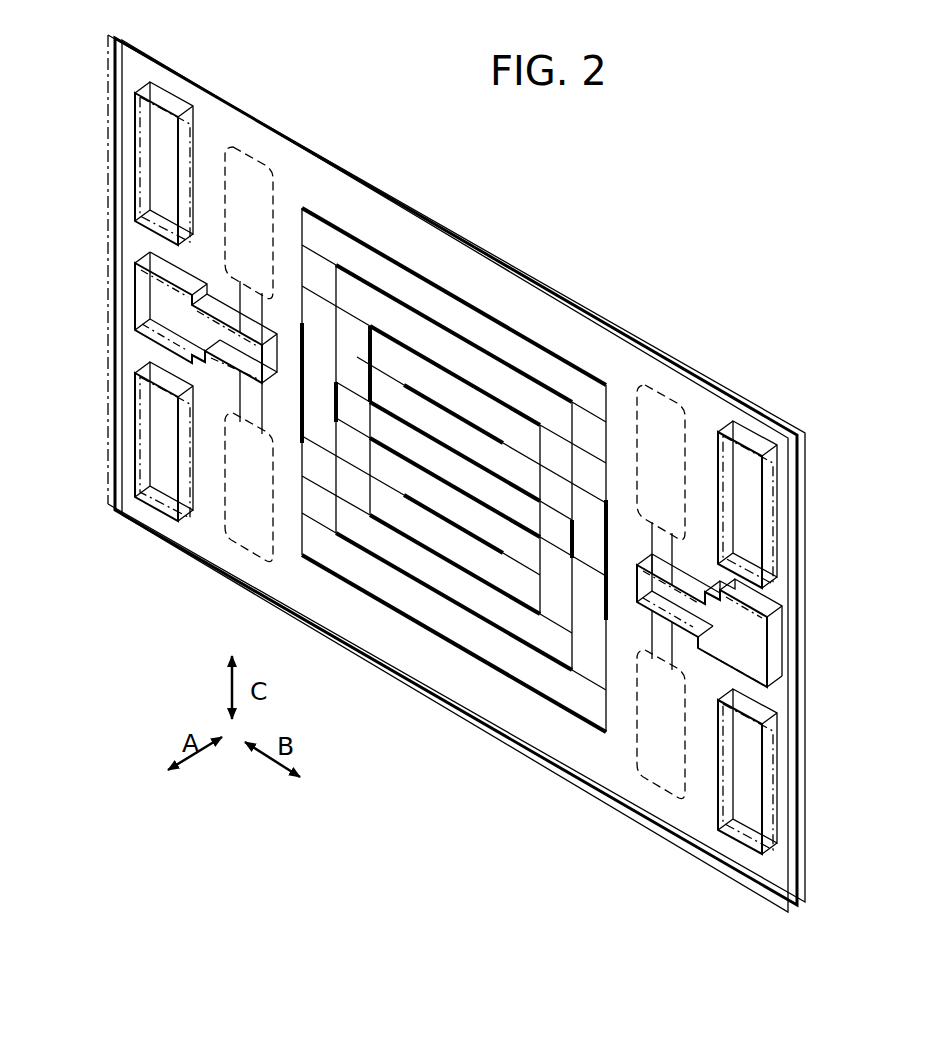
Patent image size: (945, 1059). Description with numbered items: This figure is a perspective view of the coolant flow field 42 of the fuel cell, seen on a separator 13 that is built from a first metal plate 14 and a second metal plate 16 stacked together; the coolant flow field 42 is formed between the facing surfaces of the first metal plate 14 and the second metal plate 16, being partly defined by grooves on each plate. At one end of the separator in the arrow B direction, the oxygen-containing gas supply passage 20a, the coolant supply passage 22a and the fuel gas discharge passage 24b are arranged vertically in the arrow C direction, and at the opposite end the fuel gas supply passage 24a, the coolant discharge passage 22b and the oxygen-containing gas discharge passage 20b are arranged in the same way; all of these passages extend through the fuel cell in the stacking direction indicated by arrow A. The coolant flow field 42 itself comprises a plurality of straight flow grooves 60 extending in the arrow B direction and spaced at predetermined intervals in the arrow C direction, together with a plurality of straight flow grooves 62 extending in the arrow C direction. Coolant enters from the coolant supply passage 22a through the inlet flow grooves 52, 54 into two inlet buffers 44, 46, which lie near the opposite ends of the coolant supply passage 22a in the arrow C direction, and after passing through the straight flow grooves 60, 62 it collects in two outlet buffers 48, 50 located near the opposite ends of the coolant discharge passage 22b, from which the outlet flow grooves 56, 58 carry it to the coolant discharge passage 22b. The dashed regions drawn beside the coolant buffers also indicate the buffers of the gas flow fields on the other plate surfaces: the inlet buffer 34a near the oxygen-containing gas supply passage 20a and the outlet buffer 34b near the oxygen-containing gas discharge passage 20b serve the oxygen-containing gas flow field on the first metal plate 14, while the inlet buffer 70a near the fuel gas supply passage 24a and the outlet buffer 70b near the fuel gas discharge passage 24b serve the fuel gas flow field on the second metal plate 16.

The separator 13 is at (878, 462).
The first metal plate 14 is at (806, 455).
The second metal plate 16 is at (806, 490).
The oxygen-containing gas supply passage 20a is at (165, 172).
The oxygen-containing gas discharge passage 20b is at (748, 780).
The coolant supply passage 22a is at (160, 305).
The coolant discharge passage 22b is at (750, 640).
The fuel gas supply passage 24a is at (748, 540).
The fuel gas discharge passage 24b is at (165, 397).
The coolant flow field 42 is at (546, 272).
The inlet buffer 44 is at (263, 479).
The outlet buffer 70b is at (249, 487).
The inlet buffer 46 is at (264, 236).
The inlet buffer 34a is at (249, 223).
The outlet buffer 48 is at (660, 718).
The outlet buffer 34b is at (661, 724).
The outlet buffer 50 is at (664, 447).
The inlet buffer 70a is at (661, 462).
The inlet flow grooves 52 is at (240, 410).
The inlet flow grooves 54 is at (240, 306).
The outlet flow grooves 56 is at (656, 646).
The outlet flow grooves 58 is at (656, 568).
The straight flow grooves 60 is at (440, 288).
The straight flow grooves 62 is at (302, 352).